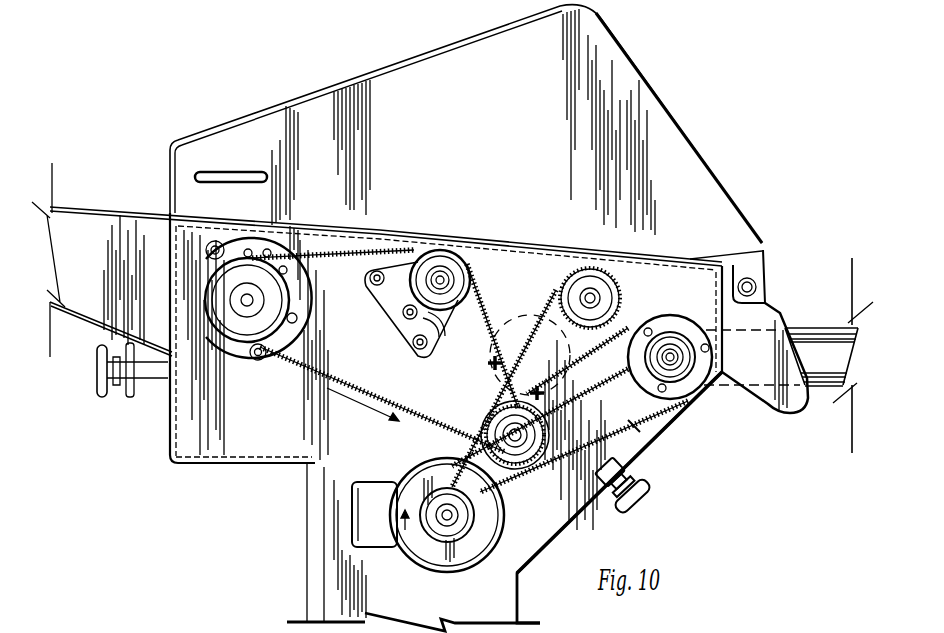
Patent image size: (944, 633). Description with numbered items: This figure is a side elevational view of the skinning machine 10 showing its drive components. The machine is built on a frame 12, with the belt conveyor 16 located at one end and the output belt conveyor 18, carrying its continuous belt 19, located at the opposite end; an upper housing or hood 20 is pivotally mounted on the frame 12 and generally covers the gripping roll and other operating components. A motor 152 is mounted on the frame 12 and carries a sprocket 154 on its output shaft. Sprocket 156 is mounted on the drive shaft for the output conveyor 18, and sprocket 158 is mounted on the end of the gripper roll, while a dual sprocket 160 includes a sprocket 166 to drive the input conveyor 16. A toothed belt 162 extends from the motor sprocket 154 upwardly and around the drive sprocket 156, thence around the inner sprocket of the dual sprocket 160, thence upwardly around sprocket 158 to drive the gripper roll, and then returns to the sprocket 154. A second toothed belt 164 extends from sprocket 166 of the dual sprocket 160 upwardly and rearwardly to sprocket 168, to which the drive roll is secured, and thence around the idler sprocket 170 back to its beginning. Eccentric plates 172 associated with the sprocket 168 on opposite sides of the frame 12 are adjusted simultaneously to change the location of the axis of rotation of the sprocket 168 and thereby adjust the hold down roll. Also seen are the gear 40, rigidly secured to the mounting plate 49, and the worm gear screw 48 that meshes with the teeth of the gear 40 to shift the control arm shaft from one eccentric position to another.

The skinning machine 10 is at (648, 54).
The frame 12 is at (283, 470).
The belt conveyor 16 is at (94, 213).
The output belt conveyor 18 is at (840, 312).
The continuous belt 19 is at (818, 328).
The upper housing or hood 20 is at (640, 90).
The gear 40 is at (637, 455).
The worm gear screw 48 is at (653, 484).
The mounting plate 49 is at (637, 426).
The motor 152 is at (367, 527).
The sprocket 154 is at (433, 527).
The sprocket 156 is at (683, 400).
The sprocket 158 is at (700, 252).
The dual sprocket 160 is at (474, 393).
The toothed belt 162 is at (647, 407).
The toothed belt 164 is at (318, 373).
The sprocket 166 is at (493, 392).
The sprocket 168 is at (275, 353).
The idler sprocket 170 is at (470, 272).
The eccentric plates 172 is at (200, 213).